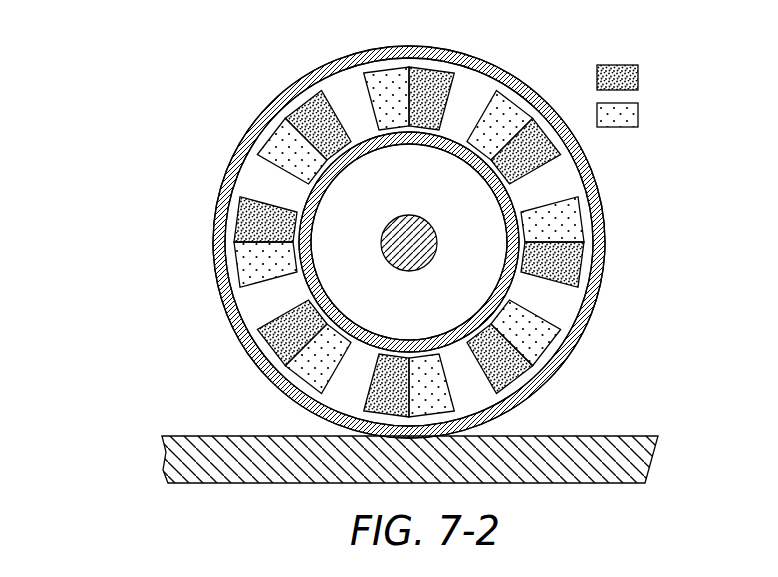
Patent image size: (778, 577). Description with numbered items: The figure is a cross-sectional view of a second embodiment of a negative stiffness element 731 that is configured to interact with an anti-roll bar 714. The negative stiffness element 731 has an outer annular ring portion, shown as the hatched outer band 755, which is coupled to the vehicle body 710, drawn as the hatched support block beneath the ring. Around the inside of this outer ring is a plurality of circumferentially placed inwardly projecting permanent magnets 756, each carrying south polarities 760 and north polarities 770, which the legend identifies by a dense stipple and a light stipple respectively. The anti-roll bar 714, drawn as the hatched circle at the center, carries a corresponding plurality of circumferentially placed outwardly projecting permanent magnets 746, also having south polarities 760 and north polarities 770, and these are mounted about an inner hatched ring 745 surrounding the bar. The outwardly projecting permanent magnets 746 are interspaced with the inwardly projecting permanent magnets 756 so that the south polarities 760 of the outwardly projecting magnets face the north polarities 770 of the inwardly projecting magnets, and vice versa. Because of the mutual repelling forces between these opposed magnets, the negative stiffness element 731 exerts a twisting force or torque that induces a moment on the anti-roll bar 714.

The negative stiffness element 731 is at (348, 225).
The outer shell 755 is at (233, 155).
The inwardly projecting permanent magnets 756 is at (297, 96).
The outwardly projecting permanent magnets 746 is at (415, 102).
The hub ring 745 is at (363, 137).
The anti-roll bar 714 is at (383, 230).
The vehicle body 710 is at (633, 463).
The south polarities 760 is at (640, 79).
The north polarities 770 is at (640, 117).